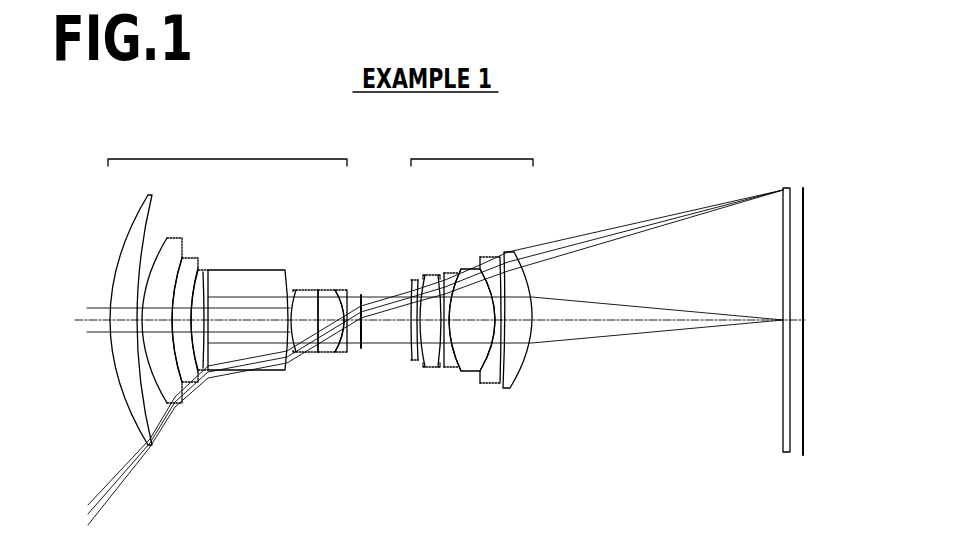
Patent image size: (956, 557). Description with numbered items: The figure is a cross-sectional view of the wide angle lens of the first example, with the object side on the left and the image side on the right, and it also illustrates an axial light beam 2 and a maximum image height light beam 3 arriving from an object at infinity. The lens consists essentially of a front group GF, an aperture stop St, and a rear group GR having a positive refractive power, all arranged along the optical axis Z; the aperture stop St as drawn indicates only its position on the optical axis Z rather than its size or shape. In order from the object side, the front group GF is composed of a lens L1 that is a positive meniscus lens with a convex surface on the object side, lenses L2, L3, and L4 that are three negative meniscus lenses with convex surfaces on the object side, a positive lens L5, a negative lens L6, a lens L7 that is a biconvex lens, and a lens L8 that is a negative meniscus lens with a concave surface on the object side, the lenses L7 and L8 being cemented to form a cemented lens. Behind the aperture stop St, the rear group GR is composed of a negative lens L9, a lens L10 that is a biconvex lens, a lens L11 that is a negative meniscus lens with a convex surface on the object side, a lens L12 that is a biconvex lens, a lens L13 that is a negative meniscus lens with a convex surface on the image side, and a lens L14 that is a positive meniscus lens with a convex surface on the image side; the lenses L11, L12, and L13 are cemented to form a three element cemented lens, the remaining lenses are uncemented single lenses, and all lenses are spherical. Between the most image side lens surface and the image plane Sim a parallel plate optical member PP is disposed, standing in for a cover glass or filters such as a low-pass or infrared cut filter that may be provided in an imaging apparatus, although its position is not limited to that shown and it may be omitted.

The lens L1 is at (151, 446).
The lens L2 is at (178, 406).
The lens L3 is at (190, 384).
The lens L4 is at (203, 372).
The positive lens L5 is at (275, 371).
The negative lens L6 is at (312, 353).
The lens L7 is at (328, 353).
The lens L8 is at (343, 353).
The negative lens L9 is at (412, 361).
The lens L10 is at (432, 368).
The lens L11 is at (453, 368).
The lens L12 is at (475, 372).
The lens L13 is at (497, 384).
The lens L14 is at (508, 389).
The aperture stop St is at (362, 294).
The optical member PP is at (786, 453).
The image plane Sim is at (803, 456).
The optical axis Z is at (99, 313).
The front group GF is at (227, 149).
The rear group GR is at (472, 150).
The axial light beam 2 is at (78, 303).
The maximum image height light beam 3 is at (78, 493).